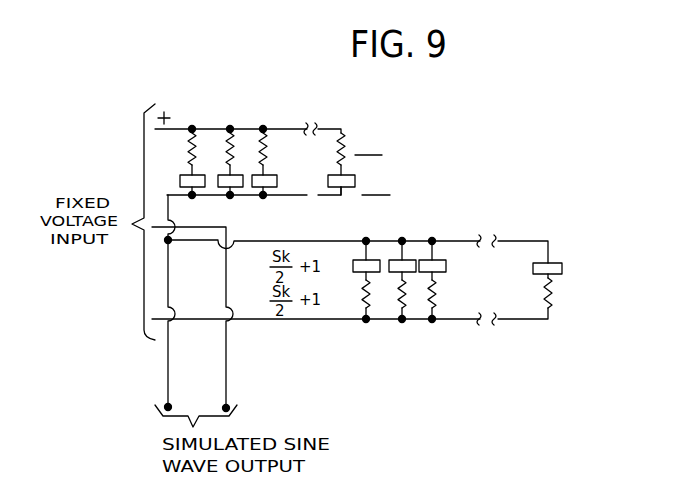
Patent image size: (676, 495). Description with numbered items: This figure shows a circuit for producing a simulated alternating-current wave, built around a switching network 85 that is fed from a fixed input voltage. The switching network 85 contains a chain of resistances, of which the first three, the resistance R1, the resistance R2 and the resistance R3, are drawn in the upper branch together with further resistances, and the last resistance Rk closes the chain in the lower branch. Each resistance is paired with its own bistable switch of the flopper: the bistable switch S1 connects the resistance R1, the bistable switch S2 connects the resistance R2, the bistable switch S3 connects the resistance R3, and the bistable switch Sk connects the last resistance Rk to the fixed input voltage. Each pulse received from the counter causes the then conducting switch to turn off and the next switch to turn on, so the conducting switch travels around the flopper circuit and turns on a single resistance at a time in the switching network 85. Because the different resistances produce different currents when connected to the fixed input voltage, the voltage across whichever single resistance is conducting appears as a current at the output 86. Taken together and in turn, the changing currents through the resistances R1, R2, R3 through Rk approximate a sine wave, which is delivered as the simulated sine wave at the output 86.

The switching network 85 is at (100, 123).
The output 86 is at (212, 403).
The resistance R1 is at (198, 149).
The resistance R2 is at (234, 150).
The resistance R3 is at (266, 150).
The bistable switch S1 is at (179, 179).
The bistable switch S2 is at (219, 180).
The bistable switch S3 is at (274, 178).
The bistable switch Sk is at (562, 270).
The resistance Rk is at (561, 292).